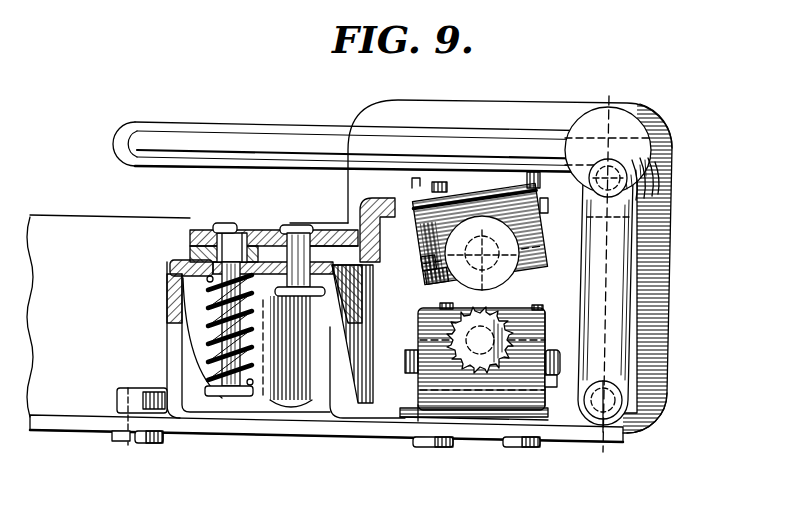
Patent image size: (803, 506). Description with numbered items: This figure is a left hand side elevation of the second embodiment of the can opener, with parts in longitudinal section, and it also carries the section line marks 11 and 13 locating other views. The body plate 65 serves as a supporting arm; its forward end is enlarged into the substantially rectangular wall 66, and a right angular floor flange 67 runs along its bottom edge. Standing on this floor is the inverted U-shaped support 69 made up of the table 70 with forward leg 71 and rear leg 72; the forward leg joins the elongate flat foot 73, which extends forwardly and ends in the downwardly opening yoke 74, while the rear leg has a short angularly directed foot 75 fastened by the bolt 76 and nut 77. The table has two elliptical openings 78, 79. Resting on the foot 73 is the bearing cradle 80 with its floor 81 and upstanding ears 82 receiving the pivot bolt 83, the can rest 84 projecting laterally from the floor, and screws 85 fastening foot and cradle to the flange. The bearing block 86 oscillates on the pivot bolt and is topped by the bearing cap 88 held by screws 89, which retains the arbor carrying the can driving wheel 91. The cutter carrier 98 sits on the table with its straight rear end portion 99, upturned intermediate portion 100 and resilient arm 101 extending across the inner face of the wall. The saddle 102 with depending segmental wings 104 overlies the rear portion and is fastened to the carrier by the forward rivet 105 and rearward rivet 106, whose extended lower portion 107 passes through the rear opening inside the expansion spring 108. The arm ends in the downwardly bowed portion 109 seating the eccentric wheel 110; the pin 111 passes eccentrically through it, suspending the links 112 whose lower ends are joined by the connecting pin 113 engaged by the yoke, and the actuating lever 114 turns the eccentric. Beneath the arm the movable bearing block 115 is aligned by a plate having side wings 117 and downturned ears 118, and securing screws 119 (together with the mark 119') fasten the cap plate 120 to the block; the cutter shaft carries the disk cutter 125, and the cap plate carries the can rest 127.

The body plate 65 is at (90, 212).
The wall 66 is at (538, 103).
The floor flange 67 is at (83, 423).
The support 69 is at (164, 330).
The table 70 is at (170, 268).
The forward leg 71 is at (340, 356).
The rear leg 72 is at (175, 345).
The elongate flat foot 73 is at (493, 420).
The yoke 74 is at (634, 411).
The angularly directed foot 75 is at (112, 416).
The bolt 76 is at (157, 445).
The nut 77 is at (120, 392).
The elliptical opening 78 is at (281, 300).
The elliptical opening 79 is at (212, 232).
The bearing cradle 80 is at (410, 413).
The floor portion 81 is at (418, 421).
The upstanding ears 82 is at (408, 366).
The pivot bolt 83 is at (560, 378).
The can rest 84 is at (503, 418).
The screws 85 is at (423, 447).
The bearing block 86 is at (545, 350).
The bearing cap 88 is at (520, 330).
The screws 89 is at (438, 306).
The can driving wheel 91 is at (467, 413).
The cutter carrier 98 is at (182, 250).
The rear end portion 99 is at (260, 230).
The intermediate portion 100 is at (360, 220).
The resilient arm 101 is at (486, 225).
The saddle 102 is at (331, 226).
The segmental wings 104 is at (262, 389).
The forward rivet 105 is at (303, 228).
The rearward rivet 106 is at (232, 222).
The extended lower portion 107 is at (168, 297).
The expansion spring 108 is at (220, 345).
The downwardly bowed portion 109 is at (647, 197).
The eccentric wheel 110 is at (626, 124).
The pin 111 is at (683, 144).
The link 112 is at (623, 282).
The connecting pin 113 is at (622, 392).
The actuating lever 114 is at (328, 131).
The movable bearing block 115 is at (435, 229).
The side wings 117 is at (463, 200).
The downturned ears 118 is at (412, 220).
The securing screws 119 is at (413, 182).
The retaining spring 119' is at (544, 150).
The cap plate 120 is at (550, 258).
The disk cutter 125 is at (489, 198).
The can rest 127 is at (420, 280).
The section line 11- 11 is at (609, 72).
The section line 13- 13 is at (266, 192).